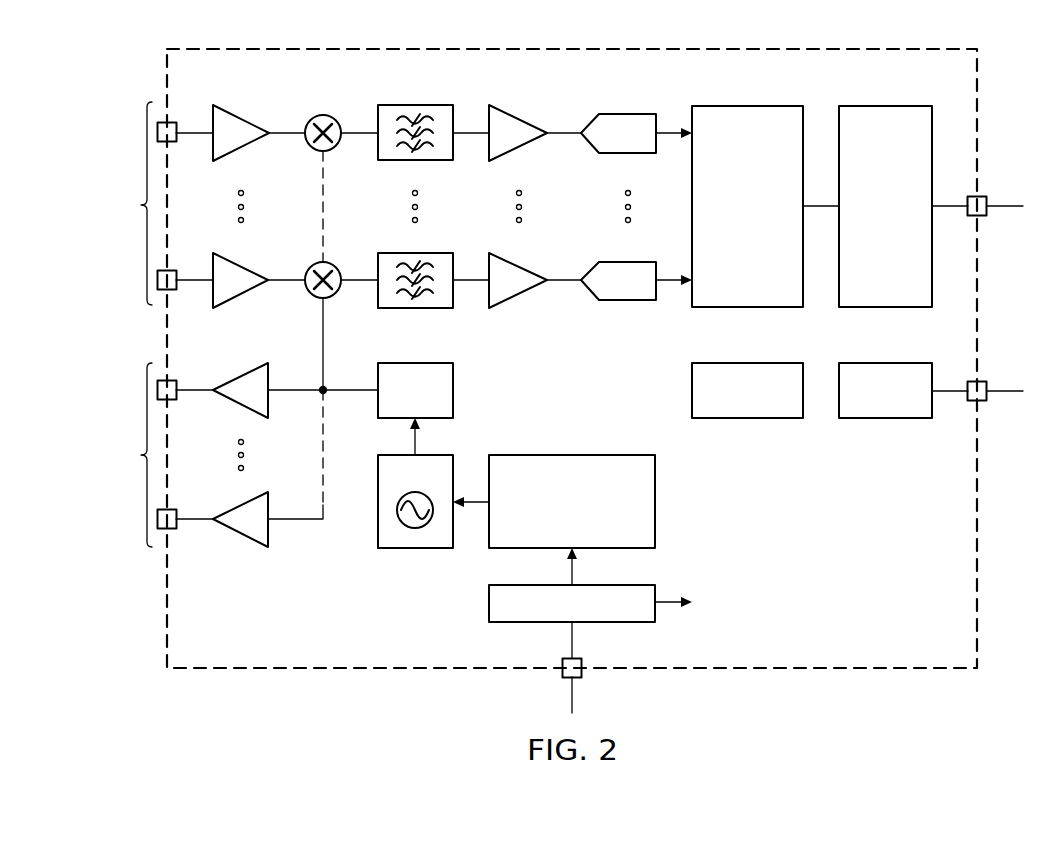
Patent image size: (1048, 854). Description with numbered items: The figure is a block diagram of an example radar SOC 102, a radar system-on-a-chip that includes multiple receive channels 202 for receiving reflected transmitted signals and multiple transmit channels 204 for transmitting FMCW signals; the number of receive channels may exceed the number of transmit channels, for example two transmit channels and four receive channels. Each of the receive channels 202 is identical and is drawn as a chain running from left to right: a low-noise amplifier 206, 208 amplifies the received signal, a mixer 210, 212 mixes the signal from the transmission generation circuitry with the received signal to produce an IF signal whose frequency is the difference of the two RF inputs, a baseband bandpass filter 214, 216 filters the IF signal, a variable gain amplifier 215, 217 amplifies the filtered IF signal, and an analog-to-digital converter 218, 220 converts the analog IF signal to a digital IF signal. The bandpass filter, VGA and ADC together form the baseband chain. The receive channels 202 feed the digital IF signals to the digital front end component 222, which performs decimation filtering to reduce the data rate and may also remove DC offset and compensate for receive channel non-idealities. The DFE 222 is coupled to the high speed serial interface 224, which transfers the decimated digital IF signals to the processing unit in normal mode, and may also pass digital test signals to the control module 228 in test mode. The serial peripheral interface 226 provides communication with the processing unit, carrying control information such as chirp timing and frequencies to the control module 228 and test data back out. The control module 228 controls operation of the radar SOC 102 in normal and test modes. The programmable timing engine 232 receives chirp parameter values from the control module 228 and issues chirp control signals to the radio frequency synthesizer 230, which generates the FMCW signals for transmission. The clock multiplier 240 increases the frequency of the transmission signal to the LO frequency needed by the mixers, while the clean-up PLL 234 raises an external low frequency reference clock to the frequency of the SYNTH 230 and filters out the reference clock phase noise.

The radar SOC 102 is at (352, 49).
The receive channels 202 is at (126, 203).
The transmit channels 204 is at (126, 455).
The low-noise amplifier 206 is at (242, 114).
The low-noise amplifier 208 is at (243, 296).
The mixer 210 is at (313, 116).
The mixer 212 is at (314, 299).
The baseband bandpass filter 214 is at (417, 103).
The baseband bandpass filter 216 is at (415, 310).
The variable gain amplifier 215 is at (517, 117).
The variable gain amplifier 217 is at (520, 298).
The analog-to-digital converter 218 is at (628, 113).
The analog-to-digital converter 220 is at (628, 301).
The digital front end component 222 is at (748, 104).
The high speed serial interface 224 is at (885, 104).
The serial peripheral interface 226 is at (885, 420).
The control module 228 is at (747, 420).
The radio frequency synthesizer 230 is at (405, 549).
The programmable timing engine 232 is at (655, 512).
The clean-up PLL 234 is at (655, 612).
The clock multiplier 240 is at (453, 400).